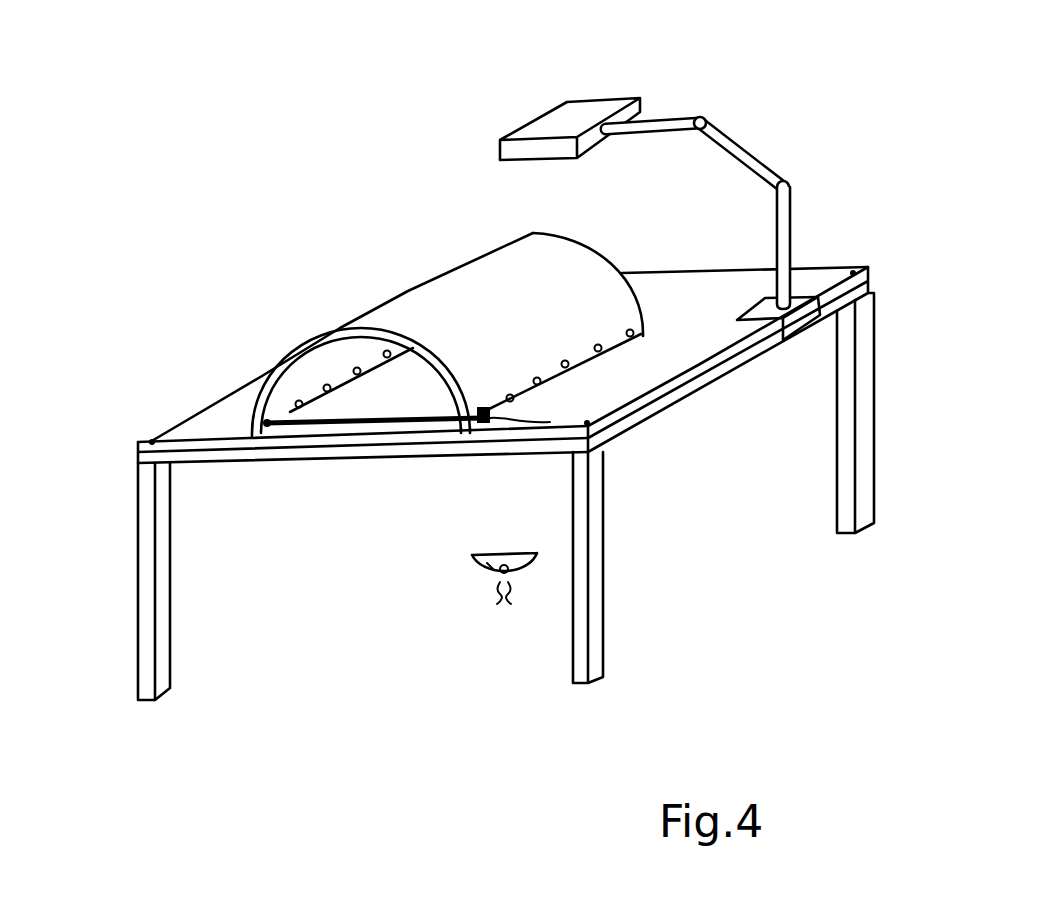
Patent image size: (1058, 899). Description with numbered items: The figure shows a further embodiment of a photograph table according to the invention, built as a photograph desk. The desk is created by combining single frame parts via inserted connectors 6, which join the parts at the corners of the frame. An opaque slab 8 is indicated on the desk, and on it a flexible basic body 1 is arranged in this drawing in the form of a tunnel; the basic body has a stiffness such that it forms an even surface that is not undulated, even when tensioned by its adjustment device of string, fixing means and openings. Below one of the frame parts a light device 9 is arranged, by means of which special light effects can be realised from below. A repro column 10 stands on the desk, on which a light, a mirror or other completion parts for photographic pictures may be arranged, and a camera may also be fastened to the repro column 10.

The flexible basic body 1 is at (408, 313).
The inserted connectors 6 is at (150, 440).
The opaque slab 8 is at (803, 280).
The light device 9 is at (482, 575).
The repro column 10 is at (735, 150).